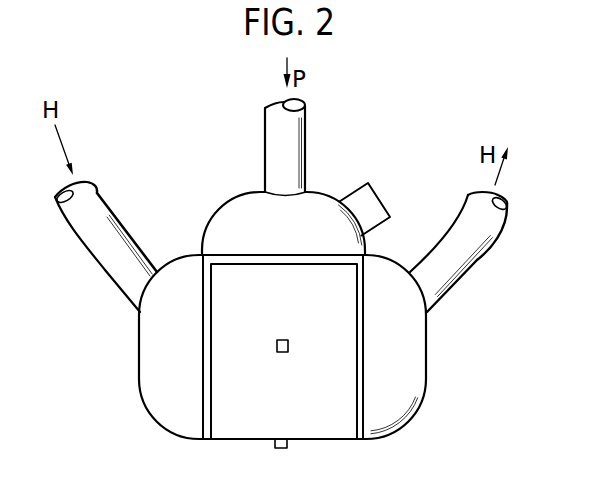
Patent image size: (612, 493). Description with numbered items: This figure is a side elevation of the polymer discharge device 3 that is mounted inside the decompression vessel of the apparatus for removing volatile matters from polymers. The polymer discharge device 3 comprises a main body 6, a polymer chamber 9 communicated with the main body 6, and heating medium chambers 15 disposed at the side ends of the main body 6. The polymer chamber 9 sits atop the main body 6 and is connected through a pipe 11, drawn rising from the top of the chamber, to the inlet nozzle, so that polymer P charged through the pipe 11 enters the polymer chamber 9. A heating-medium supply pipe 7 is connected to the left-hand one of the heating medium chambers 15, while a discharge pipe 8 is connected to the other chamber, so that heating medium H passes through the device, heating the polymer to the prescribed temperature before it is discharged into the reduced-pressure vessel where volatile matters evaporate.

The polymer discharge device 3 is at (444, 371).
The main body 6 is at (347, 437).
The heating-medium supply pipe 7 is at (85, 240).
The discharge pipe 8 is at (457, 286).
The polymer chamber 9 is at (228, 218).
The pipe 11 is at (270, 162).
The heating medium chambers 15 is at (143, 370).